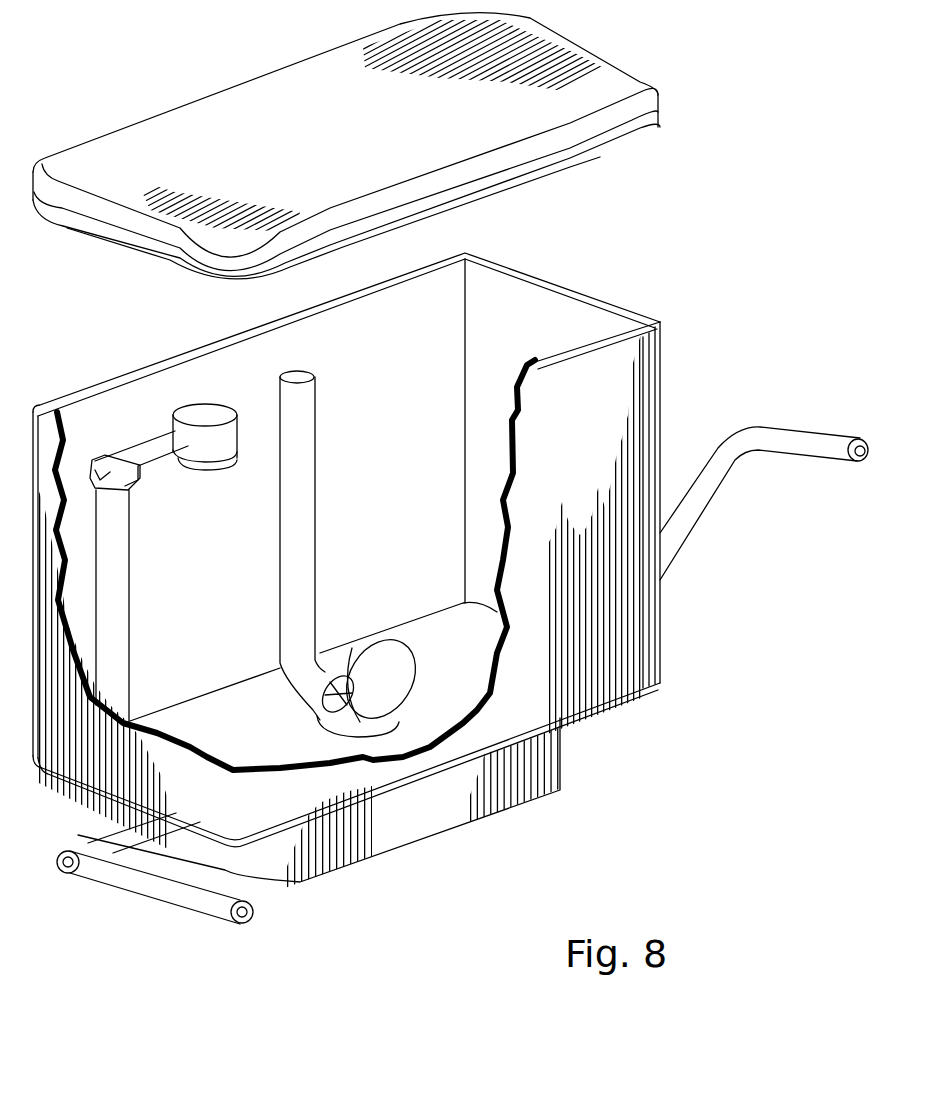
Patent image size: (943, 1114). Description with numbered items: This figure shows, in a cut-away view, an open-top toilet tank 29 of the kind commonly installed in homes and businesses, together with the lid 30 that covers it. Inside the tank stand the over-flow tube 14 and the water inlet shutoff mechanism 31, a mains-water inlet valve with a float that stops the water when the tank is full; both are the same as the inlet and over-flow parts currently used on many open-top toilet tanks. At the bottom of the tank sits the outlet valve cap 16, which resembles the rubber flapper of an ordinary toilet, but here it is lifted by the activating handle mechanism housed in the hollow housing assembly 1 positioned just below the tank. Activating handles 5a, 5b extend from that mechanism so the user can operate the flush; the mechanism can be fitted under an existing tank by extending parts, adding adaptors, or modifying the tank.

The hollow housing assembly 1 is at (365, 543).
The open-top toilet tank 29 is at (567, 282).
The lid 30 is at (268, 97).
The over-flow tube 14 is at (280, 368).
The outlet valve cap 16 is at (378, 655).
The water inlet shutoff mechanism 31 is at (190, 410).
The activating handle 5a is at (205, 905).
The activating handle 5b is at (833, 440).